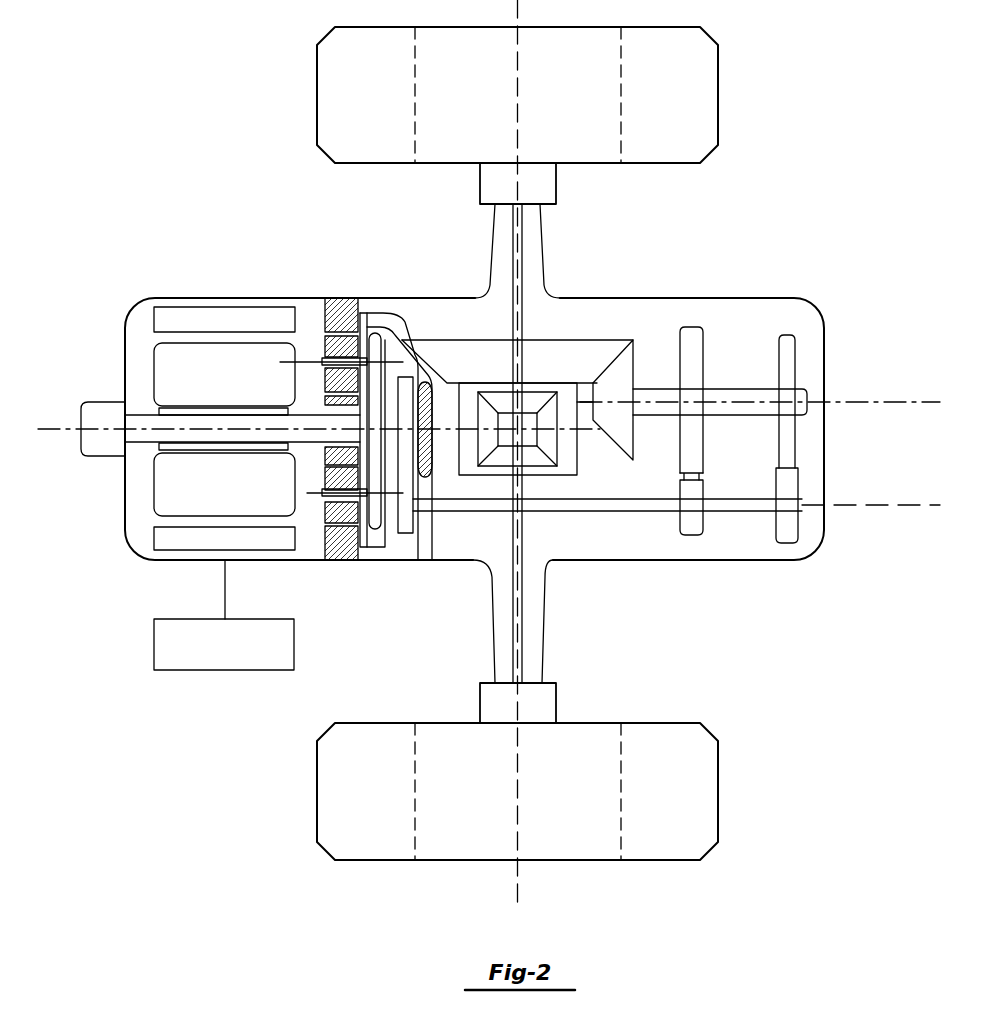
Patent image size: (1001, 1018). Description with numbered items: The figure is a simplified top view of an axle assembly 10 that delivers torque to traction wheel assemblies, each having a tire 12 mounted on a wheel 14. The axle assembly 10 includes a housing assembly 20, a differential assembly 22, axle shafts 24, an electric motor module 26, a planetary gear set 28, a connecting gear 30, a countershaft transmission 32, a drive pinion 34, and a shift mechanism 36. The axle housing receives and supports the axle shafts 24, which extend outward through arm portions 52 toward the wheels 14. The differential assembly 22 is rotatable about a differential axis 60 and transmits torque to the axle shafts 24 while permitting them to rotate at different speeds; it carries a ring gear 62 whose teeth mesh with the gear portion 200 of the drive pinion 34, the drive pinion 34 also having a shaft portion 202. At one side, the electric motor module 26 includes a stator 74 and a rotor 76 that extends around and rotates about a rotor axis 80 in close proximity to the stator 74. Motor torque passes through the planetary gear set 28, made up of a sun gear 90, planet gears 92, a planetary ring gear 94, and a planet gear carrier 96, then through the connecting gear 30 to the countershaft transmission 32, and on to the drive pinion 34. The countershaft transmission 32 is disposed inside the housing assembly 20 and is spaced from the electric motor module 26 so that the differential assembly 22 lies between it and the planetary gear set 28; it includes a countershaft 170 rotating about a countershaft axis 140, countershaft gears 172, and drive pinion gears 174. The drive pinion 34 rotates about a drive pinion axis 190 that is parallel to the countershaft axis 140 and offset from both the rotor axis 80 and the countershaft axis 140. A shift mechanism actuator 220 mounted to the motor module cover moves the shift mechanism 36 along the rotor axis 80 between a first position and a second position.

The axle assembly 10 is at (780, 265).
The tire 12 is at (718, 95).
The wheel 14 is at (435, 165).
The housing assembly 20 is at (713, 297).
The differential assembly 22 is at (584, 472).
The axle shaft 24 is at (513, 240).
The electric motor module 26 is at (147, 298).
The planetary gear set 28 is at (338, 296).
The connecting gear 30 is at (402, 533).
The countershaft transmission 32 is at (742, 545).
The drive pinion 34 is at (660, 388).
The shift mechanism 36 is at (145, 412).
The arm portion 52 is at (543, 235).
The differential axis 60 is at (520, 327).
The ring gear 62 is at (600, 337).
The stator 74 is at (232, 320).
The rotor 76 is at (231, 385).
The rotor axis 80 is at (70, 428).
The sun gear 90 is at (330, 453).
The planet gear 92 is at (322, 382).
The planetary ring gear 94 is at (345, 547).
The planet gear carrier 96 is at (377, 520).
The countershaft axis 140 is at (873, 505).
The countershaft 170 is at (653, 512).
The countershaft gear 172 is at (777, 470).
The drive pinion gear 174 is at (777, 433).
The drive pinion axis 190 is at (902, 404).
The gear portion 200 is at (617, 343).
The shaft portion 202 is at (745, 388).
The shift mechanism actuator 220 is at (98, 457).